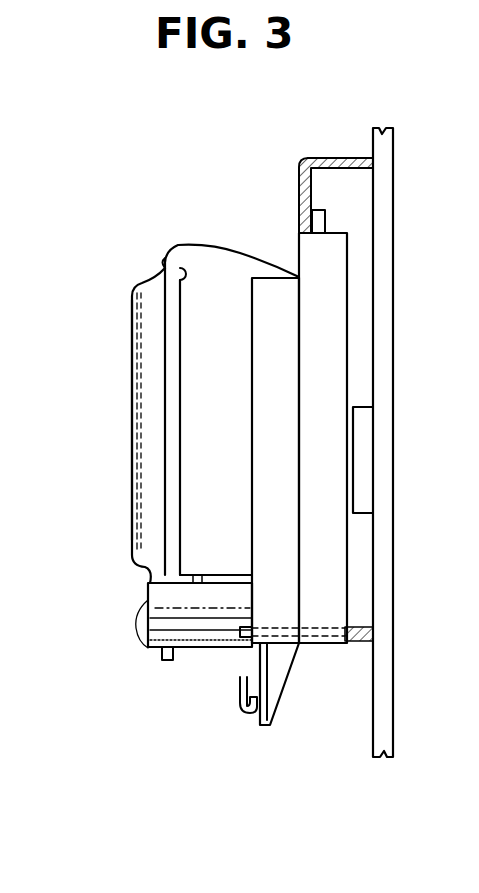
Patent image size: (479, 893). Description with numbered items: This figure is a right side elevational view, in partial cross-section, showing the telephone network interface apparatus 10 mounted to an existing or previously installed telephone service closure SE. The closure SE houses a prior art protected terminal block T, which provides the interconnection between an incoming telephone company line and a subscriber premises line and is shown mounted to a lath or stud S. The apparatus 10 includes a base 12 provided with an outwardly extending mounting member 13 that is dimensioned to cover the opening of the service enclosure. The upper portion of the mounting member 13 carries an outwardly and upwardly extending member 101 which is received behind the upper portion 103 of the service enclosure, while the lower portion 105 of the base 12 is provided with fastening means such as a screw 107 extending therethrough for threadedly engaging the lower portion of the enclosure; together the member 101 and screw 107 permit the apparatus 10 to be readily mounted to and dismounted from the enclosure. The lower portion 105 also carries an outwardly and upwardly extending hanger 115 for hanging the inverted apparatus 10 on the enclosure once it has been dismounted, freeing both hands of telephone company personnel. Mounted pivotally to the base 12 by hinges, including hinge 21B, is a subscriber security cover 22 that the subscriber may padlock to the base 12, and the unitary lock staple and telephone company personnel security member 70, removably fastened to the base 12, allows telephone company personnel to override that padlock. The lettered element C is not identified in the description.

The telephone network interface apparatus 10 is at (199, 228).
The base 12 is at (283, 572).
The outwardly extending mounting member 13 is at (335, 270).
The subscriber security cover 22 is at (132, 409).
The hinge 21B is at (165, 258).
The unitary lock staple and telephone company personnel security member 70 is at (122, 657).
The outwardly and upwardly extending member 101 is at (327, 214).
The upper portion of the telephone service enclosure 103 is at (299, 200).
The lower portion of the base 105 is at (252, 650).
The screw 107 is at (280, 645).
The outwardly and upwardly extending hanger 115 is at (232, 695).
The lath or stud S is at (395, 356).
The service closure SE is at (342, 158).
The protected terminal block T is at (353, 407).
The casing C is at (67, 365).